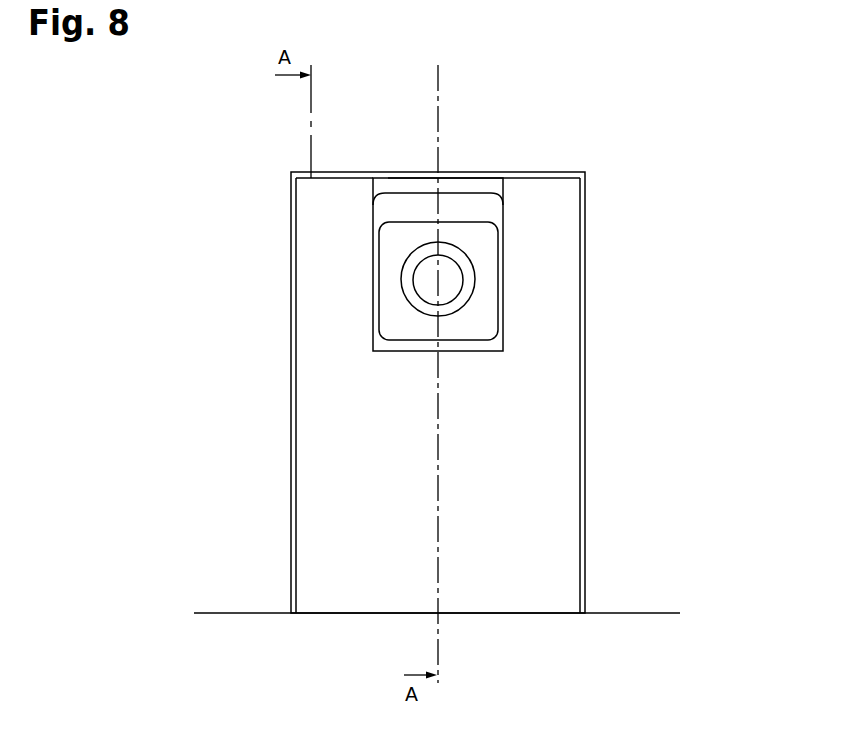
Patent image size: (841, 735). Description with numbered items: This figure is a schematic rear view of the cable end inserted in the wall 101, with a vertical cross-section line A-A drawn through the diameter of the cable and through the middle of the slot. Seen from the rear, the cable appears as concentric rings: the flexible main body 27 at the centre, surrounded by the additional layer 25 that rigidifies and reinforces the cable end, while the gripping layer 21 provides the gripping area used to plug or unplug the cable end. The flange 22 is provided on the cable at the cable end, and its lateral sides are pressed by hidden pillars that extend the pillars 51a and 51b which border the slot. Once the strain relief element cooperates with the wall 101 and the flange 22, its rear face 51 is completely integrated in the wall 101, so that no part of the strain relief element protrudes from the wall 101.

The gripping layer 21 is at (485, 243).
The flange 22 is at (473, 200).
The additional layer 25 is at (402, 272).
The main body 27 is at (414, 287).
The rear face 51 is at (540, 460).
The pillar 51a is at (545, 285).
The pillar 51b is at (345, 215).
The wall 101 is at (627, 513).